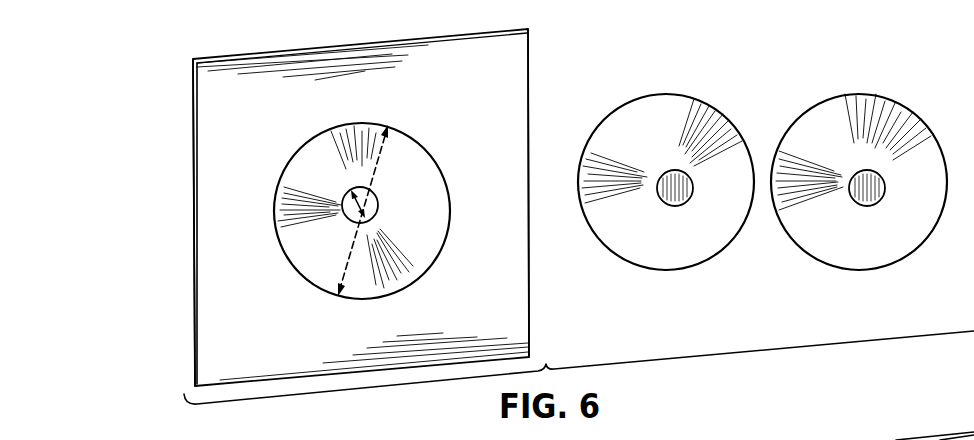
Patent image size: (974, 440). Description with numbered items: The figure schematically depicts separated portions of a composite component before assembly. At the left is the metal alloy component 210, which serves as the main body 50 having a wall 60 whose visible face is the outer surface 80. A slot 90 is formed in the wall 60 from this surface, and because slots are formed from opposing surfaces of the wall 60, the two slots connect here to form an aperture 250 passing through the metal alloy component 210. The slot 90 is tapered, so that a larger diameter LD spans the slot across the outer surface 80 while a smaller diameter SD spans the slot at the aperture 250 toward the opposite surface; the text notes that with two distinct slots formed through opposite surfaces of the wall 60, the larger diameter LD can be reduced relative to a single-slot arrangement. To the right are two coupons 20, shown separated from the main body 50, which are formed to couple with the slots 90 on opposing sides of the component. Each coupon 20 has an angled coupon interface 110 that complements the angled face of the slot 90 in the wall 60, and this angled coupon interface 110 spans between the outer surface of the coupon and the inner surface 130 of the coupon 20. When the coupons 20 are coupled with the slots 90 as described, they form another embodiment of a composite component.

The coupon 20 is at (618, 80).
The main body 50 is at (226, 190).
The wall 60 is at (530, 152).
The outer surface 80 is at (295, 343).
The slot 90 is at (416, 231).
The angled coupon interface 110 is at (668, 234).
The inner surface of coupon 130 is at (680, 192).
The metal alloy component 210 is at (172, 97).
The aperture 250 is at (327, 191).
The smaller diameter SD is at (376, 196).
The larger diameter LD is at (348, 254).